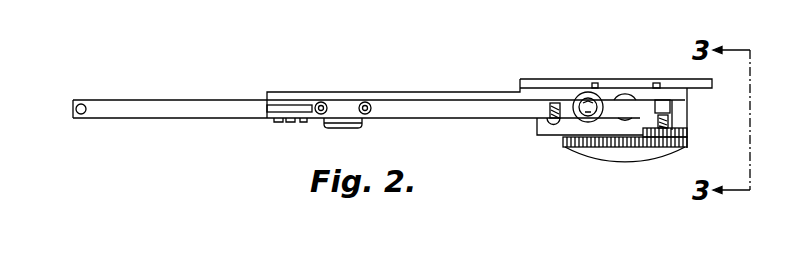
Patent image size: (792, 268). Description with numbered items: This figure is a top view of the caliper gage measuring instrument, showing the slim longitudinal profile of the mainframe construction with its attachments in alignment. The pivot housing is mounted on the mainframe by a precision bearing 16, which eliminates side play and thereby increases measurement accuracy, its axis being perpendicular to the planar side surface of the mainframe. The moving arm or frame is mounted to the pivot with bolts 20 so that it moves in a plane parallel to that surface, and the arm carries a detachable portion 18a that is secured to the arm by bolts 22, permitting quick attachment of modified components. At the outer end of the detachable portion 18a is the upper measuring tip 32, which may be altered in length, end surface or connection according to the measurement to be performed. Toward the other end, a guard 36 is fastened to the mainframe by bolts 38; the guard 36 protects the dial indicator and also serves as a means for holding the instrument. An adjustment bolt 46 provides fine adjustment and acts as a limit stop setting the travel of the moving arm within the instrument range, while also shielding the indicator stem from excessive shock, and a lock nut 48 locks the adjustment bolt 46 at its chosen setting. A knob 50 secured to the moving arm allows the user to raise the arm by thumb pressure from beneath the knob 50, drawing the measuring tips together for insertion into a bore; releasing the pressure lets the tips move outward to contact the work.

The detachable portion 18a is at (172, 100).
The upper measuring tip 32 is at (79, 104).
The guard 36 is at (695, 80).
The bolts 38 is at (593, 82).
The bolts 22 is at (274, 121).
The bolts 20 is at (363, 103).
The precision bearing 16 is at (361, 121).
The adjustment bolt 46 is at (577, 98).
The lock nut 48 is at (598, 101).
The knob 50 is at (686, 133).